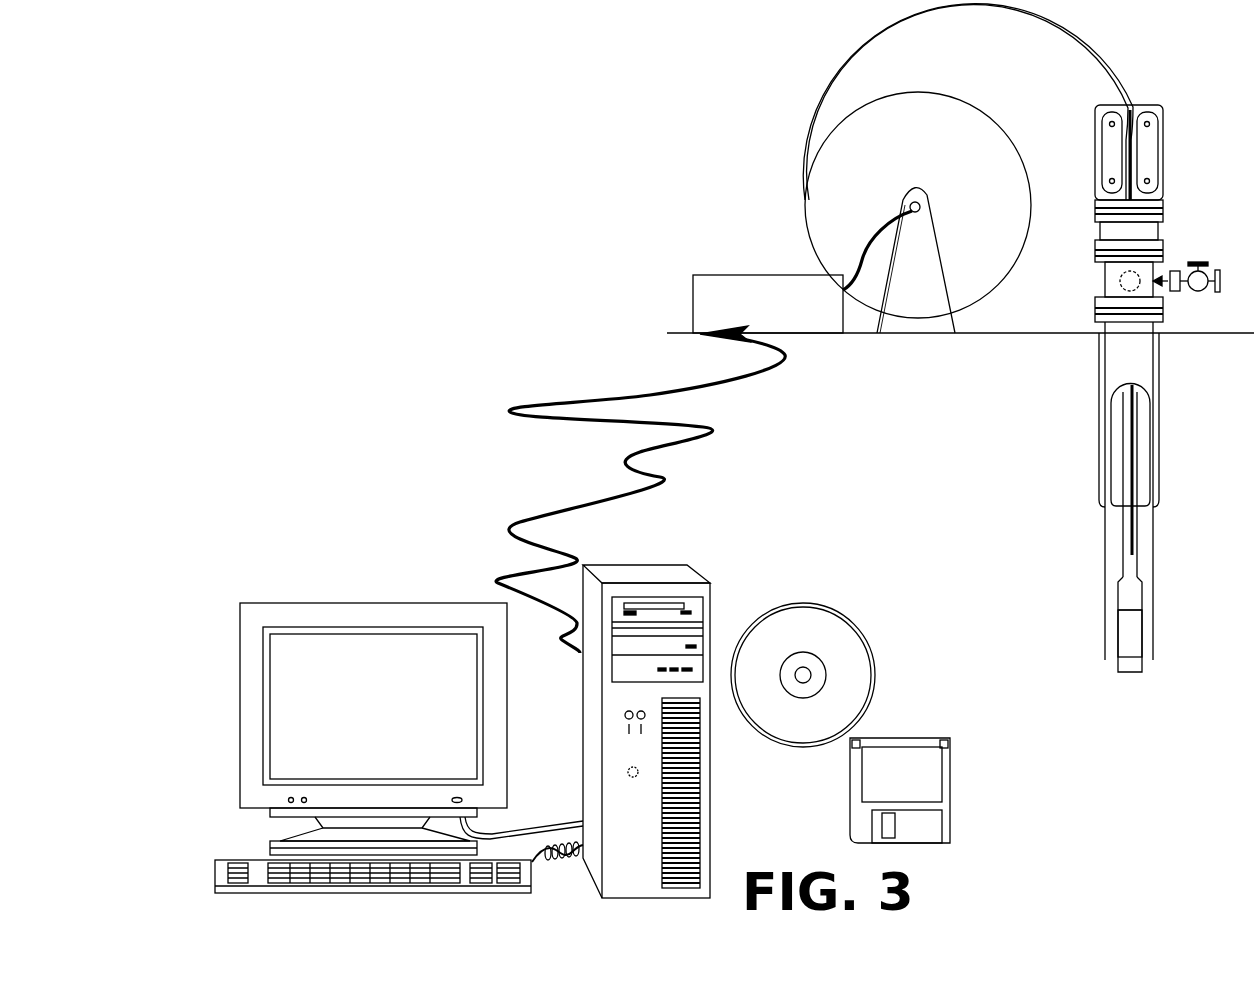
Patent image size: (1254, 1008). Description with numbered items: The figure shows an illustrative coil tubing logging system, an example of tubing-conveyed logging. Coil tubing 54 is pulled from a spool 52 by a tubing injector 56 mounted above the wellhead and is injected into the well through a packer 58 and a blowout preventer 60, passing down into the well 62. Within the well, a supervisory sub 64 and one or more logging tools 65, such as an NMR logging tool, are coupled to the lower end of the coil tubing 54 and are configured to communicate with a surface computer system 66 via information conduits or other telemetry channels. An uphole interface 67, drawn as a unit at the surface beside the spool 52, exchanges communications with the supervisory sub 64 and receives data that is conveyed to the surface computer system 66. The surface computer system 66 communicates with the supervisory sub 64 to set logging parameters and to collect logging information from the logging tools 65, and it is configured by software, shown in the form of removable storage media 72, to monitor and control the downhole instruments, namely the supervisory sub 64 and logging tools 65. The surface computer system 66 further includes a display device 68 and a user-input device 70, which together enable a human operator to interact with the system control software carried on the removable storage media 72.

The spool 52 is at (887, 168).
The coil tubing 54 is at (853, 74).
The tubing injector 56 is at (1163, 136).
The packer 58 is at (1163, 229).
The blowout preventer 60 is at (1104, 282).
The well 62 is at (1157, 382).
The supervisory sub 64 is at (1142, 591).
The logging tool 65 is at (1142, 637).
The surface computer system 66 is at (582, 770).
The uphole interface 67 is at (743, 275).
The display device 68 is at (257, 810).
The user-input device 70 is at (255, 895).
The removable storage media 72 is at (852, 758).